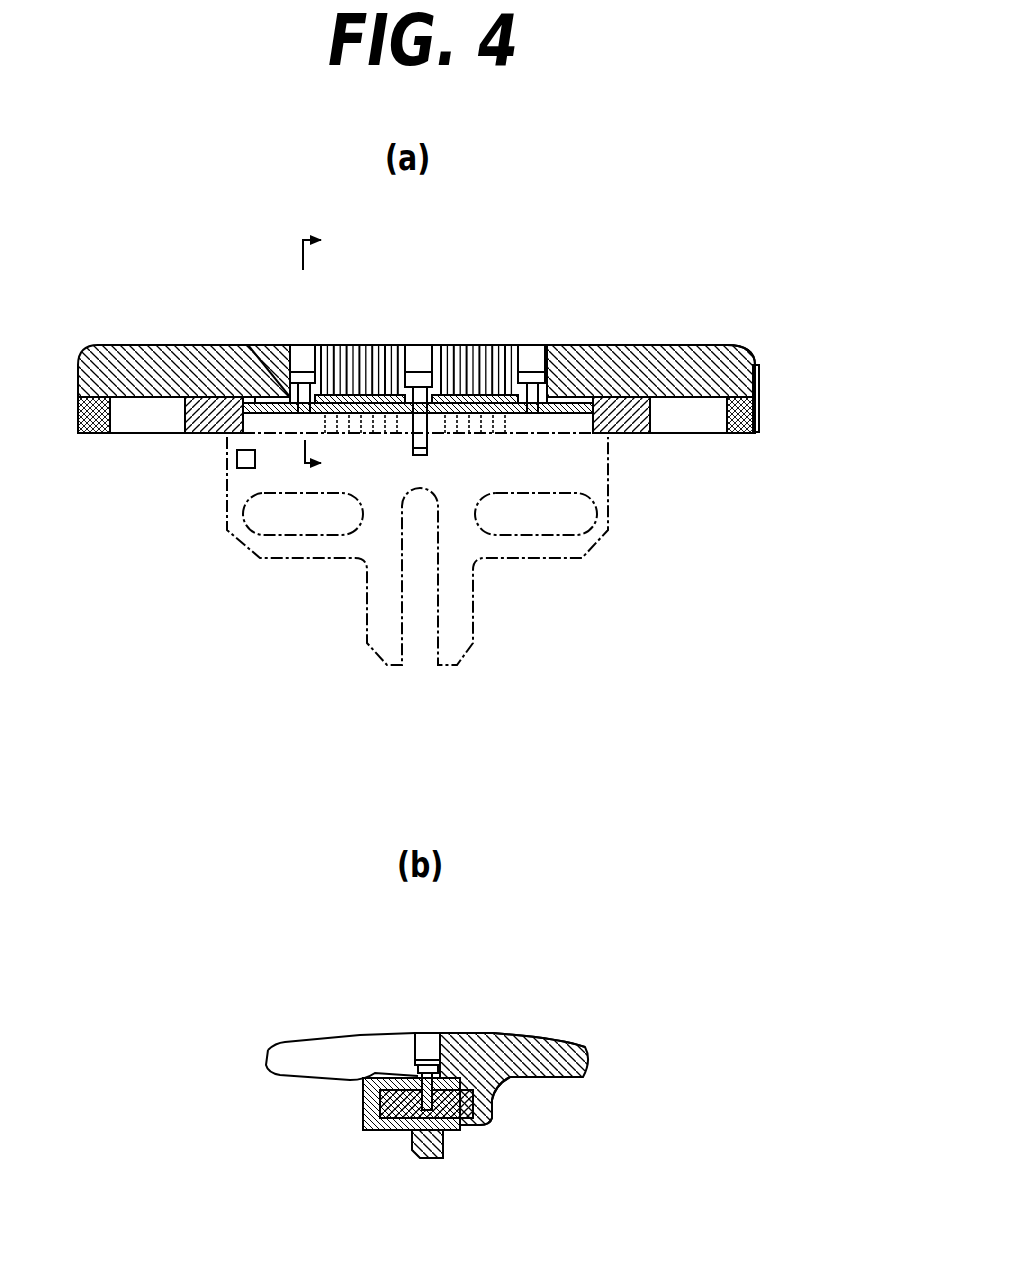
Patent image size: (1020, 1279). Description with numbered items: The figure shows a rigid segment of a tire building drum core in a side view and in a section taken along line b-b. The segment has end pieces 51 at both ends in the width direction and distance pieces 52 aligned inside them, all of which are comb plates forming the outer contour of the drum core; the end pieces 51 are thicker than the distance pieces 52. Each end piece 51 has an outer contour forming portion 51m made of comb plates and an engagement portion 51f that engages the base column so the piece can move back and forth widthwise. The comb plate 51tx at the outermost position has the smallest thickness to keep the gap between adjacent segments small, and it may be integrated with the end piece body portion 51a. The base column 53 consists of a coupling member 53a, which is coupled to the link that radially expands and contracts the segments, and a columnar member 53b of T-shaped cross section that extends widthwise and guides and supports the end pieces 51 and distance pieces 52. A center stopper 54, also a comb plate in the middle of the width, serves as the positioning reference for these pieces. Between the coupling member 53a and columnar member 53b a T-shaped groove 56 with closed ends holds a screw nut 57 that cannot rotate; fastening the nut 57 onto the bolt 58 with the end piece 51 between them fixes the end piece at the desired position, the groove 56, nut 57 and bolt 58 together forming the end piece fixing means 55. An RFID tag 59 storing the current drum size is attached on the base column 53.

The end piece 51 is at (138, 342).
The end piece body portion 51a is at (640, 353).
The comb plate at the outermost portion 51tx is at (758, 375).
The outer contour forming portion 51m is at (580, 1044).
The engagement portion 51f is at (488, 1122).
The distance piece 52 is at (357, 345).
The base column 53 is at (660, 470).
The coupling member 53a is at (500, 543).
The columnar member 53b is at (202, 435).
The center stopper 54 is at (422, 345).
The end piece fixing means 55 is at (421, 1046).
The T-shaped groove 56 is at (288, 345).
The screw nut 57 is at (242, 345).
The bolt 58 is at (315, 345).
The RFID tag 59 is at (243, 470).